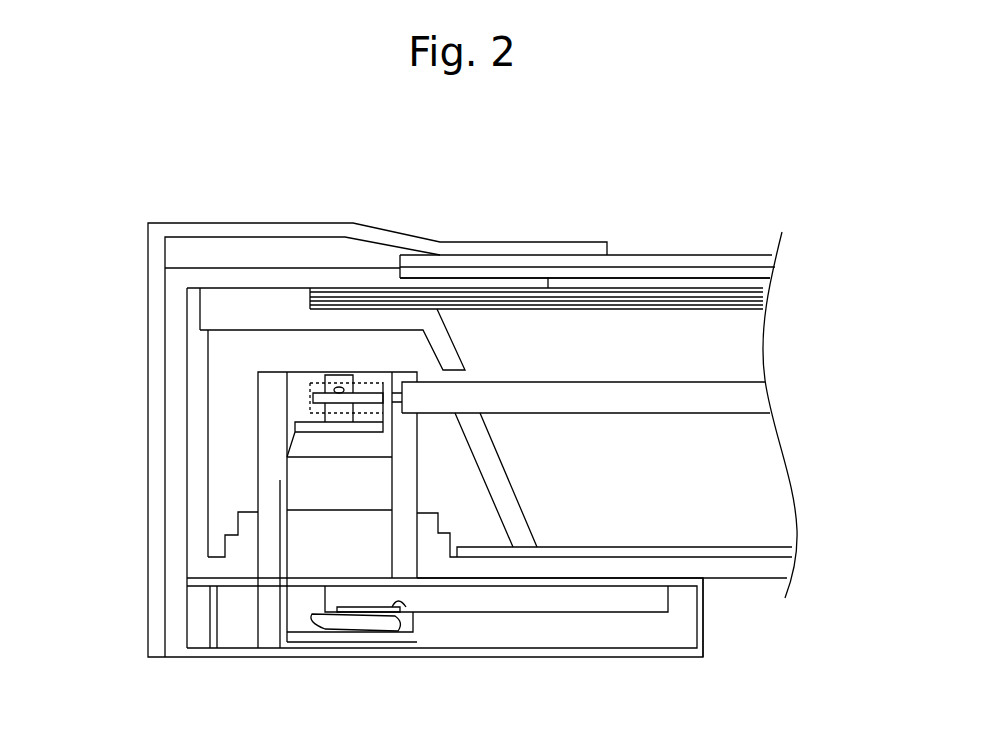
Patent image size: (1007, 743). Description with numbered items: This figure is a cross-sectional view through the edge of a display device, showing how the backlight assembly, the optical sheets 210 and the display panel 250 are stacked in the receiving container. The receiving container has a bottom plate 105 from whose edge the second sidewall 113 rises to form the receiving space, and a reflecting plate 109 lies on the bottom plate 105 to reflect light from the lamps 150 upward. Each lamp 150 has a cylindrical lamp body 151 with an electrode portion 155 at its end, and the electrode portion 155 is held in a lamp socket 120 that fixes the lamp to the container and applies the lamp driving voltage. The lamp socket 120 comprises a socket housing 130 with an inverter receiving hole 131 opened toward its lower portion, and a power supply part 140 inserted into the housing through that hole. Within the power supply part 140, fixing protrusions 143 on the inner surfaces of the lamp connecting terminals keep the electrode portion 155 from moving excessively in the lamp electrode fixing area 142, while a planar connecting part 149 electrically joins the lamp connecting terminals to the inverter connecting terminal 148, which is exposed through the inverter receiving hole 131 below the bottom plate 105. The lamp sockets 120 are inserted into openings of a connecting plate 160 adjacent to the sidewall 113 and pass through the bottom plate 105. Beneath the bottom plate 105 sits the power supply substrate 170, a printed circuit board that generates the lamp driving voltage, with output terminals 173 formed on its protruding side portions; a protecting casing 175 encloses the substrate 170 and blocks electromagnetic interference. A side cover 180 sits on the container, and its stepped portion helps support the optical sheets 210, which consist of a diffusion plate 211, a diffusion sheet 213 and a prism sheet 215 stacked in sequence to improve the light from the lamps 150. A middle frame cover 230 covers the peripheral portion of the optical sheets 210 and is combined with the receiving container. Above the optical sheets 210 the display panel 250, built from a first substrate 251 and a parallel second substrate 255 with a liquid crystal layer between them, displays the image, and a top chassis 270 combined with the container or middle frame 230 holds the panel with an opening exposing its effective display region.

The bottom plate 105 is at (790, 557).
The reflecting plate 109 is at (792, 547).
The second sidewall 113 is at (196, 538).
The lamp socket 120 is at (223, 500).
The socket housing 130 is at (268, 412).
The inverter receiving hole 131 is at (283, 480).
The power supply part 140 is at (268, 368).
The lamp electrode fixing area 142 is at (325, 612).
The fixing protrusions 143 is at (322, 395).
The inverter connecting terminal 148 is at (373, 617).
The connecting part 149 is at (278, 525).
The lamp 150 is at (553, 357).
The lamp body 151 is at (498, 395).
The electrode portion 155 is at (337, 580).
The connecting plate 160 is at (237, 586).
The power supply substrate 170 is at (486, 598).
The output terminals 173 is at (406, 602).
The protecting casing 175 is at (703, 633).
The side cover 180 is at (338, 320).
The optical sheets 210 is at (599, 298).
The diffusion plate 211 is at (765, 306).
The diffusion sheet 213 is at (765, 299).
The prism sheet 215 is at (765, 291).
The middle frame cover 230 is at (180, 276).
The display panel 250 is at (587, 206).
The first substrate 251 is at (703, 275).
The second substrate 255 is at (654, 258).
The top chassis 270 is at (148, 250).